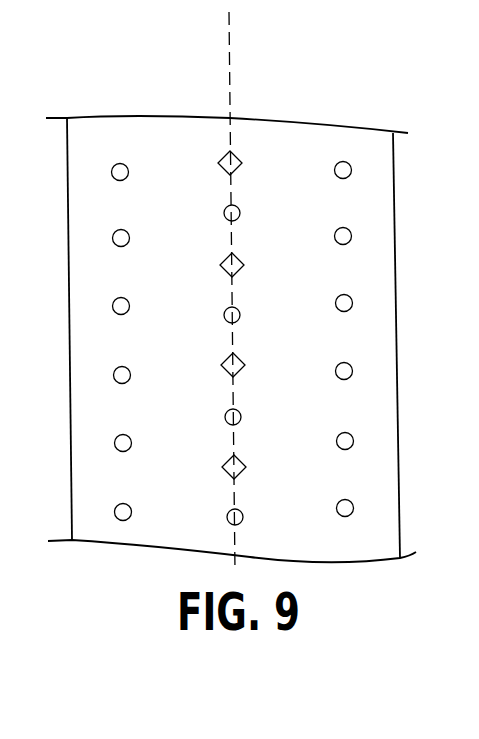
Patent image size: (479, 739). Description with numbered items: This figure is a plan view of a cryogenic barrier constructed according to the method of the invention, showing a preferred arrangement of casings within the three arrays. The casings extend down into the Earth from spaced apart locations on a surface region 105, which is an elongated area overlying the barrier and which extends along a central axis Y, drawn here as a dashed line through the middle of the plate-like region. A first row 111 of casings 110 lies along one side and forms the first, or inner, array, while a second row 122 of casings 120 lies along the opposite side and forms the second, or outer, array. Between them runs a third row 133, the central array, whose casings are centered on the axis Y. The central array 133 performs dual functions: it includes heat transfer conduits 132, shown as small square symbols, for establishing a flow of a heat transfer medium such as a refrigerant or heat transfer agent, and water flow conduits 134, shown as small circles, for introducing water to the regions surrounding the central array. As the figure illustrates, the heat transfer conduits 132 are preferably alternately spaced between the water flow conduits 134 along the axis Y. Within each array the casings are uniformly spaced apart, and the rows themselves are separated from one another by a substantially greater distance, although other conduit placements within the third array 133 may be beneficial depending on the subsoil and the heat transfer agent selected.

The surface region 105 is at (367, 265).
The casing 110 is at (112, 172).
The first row of casings 111 is at (117, 115).
The casing 120 is at (352, 170).
The second row of casings 122 is at (348, 125).
The third row of casings 133 is at (238, 114).
The heat transfer conduit 132 is at (240, 166).
The water flow conduit 134 is at (226, 312).
The central axis Y is at (229, 78).